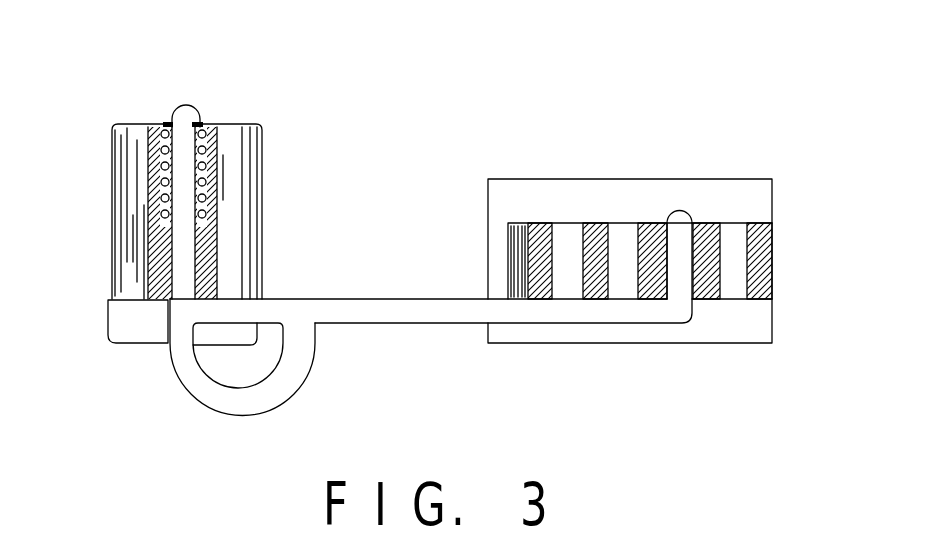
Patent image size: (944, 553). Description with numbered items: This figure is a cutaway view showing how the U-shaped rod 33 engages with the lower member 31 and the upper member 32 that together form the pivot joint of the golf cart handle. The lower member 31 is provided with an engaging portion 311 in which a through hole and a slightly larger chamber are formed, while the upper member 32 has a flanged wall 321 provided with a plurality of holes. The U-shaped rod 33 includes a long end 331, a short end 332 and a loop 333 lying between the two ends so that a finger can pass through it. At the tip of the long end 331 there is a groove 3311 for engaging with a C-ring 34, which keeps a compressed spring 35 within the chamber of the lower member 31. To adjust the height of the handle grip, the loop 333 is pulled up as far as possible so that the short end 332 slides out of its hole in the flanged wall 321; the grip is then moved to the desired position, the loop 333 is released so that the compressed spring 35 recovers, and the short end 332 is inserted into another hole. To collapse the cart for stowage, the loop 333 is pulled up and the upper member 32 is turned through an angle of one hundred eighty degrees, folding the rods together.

The lower member 31 is at (92, 233).
The engaging portion 311 is at (122, 193).
The upper member 32 is at (636, 218).
The flanged wall 321 is at (520, 247).
The U-shaped rod 33 is at (446, 265).
The long end 331 is at (183, 172).
The groove 3311 is at (173, 127).
The short end 332 is at (669, 222).
The loop 333 is at (238, 398).
The C-ring 34 is at (163, 123).
The compressed spring 35 is at (205, 125).